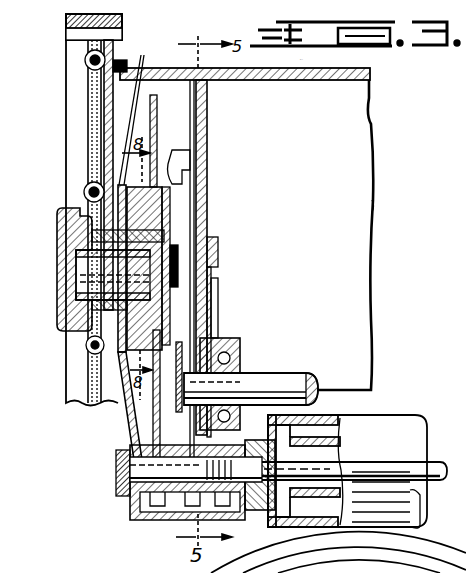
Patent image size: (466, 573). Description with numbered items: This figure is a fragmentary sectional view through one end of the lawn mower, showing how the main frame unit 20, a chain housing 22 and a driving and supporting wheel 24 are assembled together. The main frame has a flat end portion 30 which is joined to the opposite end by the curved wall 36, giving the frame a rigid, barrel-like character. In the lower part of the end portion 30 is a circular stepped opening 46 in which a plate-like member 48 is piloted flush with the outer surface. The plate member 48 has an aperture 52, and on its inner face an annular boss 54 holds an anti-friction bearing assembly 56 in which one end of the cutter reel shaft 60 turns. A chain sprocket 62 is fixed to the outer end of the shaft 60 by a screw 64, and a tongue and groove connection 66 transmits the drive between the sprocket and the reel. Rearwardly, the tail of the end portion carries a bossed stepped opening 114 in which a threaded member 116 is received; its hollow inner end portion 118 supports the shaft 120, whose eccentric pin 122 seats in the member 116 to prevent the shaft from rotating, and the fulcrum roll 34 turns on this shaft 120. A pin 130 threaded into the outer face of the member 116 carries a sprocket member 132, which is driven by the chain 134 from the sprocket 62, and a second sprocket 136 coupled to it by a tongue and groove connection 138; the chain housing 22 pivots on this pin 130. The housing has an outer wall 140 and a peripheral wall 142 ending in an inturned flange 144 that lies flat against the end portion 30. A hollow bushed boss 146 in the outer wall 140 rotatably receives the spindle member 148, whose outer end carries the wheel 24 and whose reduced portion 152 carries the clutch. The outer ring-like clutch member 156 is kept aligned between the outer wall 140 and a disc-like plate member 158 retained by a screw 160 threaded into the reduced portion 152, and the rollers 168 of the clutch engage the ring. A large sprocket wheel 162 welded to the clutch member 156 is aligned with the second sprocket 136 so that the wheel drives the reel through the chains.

The main frame unit 20 is at (374, 125).
The chain housing 22 is at (134, 195).
The driving and supporting wheel 24 is at (66, 162).
The end portion 30 is at (202, 128).
The fulcrum roll 34 is at (412, 432).
The curved wall 36 is at (374, 210).
The stepped opening 46 is at (216, 262).
The plate-like member 48 is at (218, 290).
The aperture 52 is at (220, 345).
The annular boss 54 is at (244, 345).
The anti-friction bearing assembly 56 is at (250, 358).
The shaft 60 is at (300, 374).
The chain sprocket 62 is at (180, 342).
The screw 64 is at (165, 408).
The tongue and groove connection 66 is at (236, 380).
The stepped opening 114 is at (245, 545).
The member 116 is at (225, 545).
The hollow inner end portion 118 is at (255, 501).
The shaft 120 is at (345, 470).
The eccentric pin 122 is at (242, 470).
The pin 130 is at (118, 483).
The sprocket member 132 is at (165, 522).
The chain 134 is at (160, 235).
The second sprocket 136 is at (130, 514).
The tongue and groove connection 138 is at (118, 468).
The outer wall 140 is at (110, 115).
The peripheral wall 142 is at (145, 522).
The inturned flange 144 is at (206, 108).
The hollow bushed boss 146 is at (70, 224).
The spindle member 148 is at (75, 262).
The reduced portion 152 is at (115, 274).
The outer ring-like clutch member 156 is at (92, 368).
The disc-like plate member 158 is at (175, 222).
The screw 160 is at (185, 250).
The sprocket wheel 162 is at (157, 140).
The roller 168 is at (200, 200).